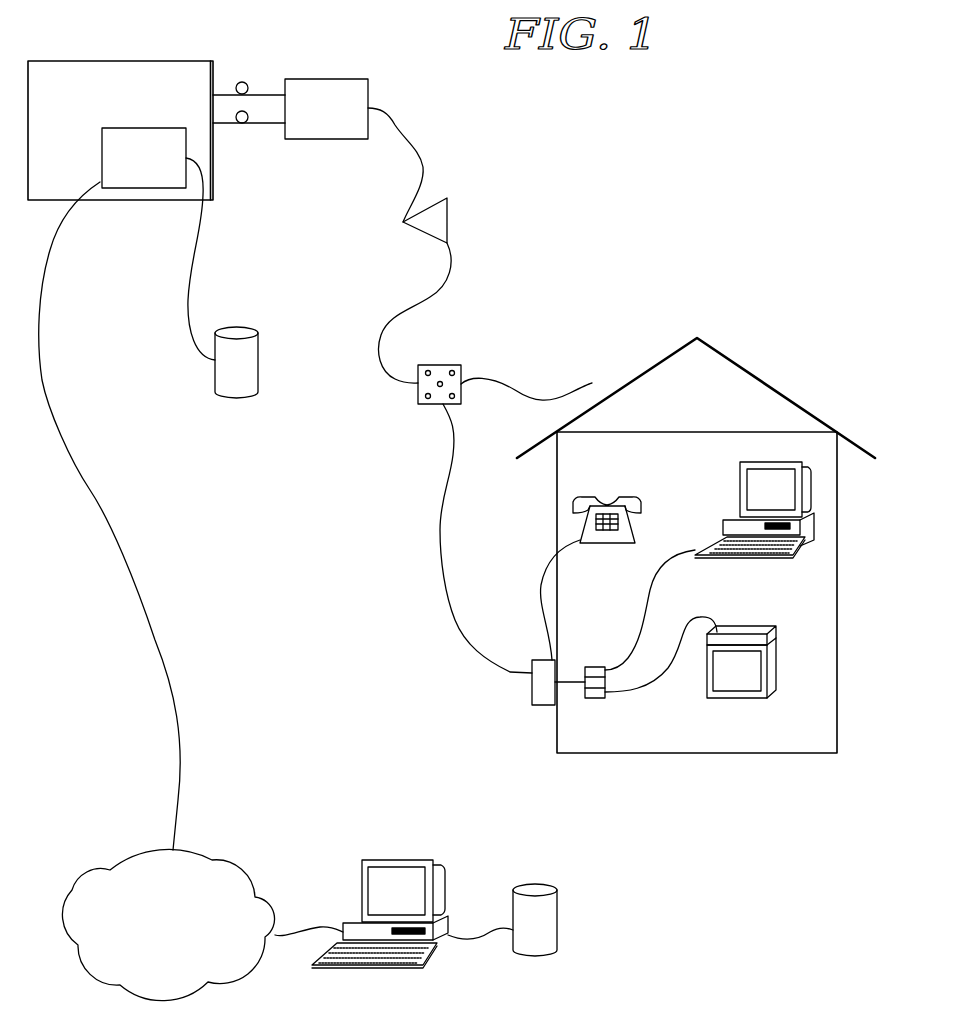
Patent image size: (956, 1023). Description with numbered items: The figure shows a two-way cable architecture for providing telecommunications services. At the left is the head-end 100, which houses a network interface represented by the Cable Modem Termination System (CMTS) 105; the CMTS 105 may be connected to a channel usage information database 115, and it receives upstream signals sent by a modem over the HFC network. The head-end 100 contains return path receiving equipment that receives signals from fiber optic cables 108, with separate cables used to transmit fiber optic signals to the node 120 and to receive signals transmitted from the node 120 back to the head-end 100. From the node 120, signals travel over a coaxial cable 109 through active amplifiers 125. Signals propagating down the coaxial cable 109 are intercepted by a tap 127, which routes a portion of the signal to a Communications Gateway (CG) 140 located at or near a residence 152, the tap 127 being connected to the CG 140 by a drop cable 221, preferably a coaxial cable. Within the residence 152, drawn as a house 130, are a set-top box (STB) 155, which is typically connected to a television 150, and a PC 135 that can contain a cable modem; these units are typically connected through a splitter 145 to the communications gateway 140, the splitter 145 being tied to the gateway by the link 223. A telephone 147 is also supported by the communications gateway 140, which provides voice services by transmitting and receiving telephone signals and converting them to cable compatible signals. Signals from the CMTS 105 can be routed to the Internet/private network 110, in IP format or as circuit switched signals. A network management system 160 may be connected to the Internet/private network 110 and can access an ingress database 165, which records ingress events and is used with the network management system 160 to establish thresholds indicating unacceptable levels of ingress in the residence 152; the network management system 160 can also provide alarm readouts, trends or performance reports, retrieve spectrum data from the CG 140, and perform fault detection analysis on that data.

The head-end 100 is at (120, 113).
The Cable Modem Termination System 105 is at (137, 139).
The fiber optic cables 108 is at (249, 83).
The coaxial cable 109 is at (415, 165).
The Internet/private network 110 is at (157, 591).
The channel usage information database 115 is at (249, 278).
The node 120 is at (338, 91).
The active amplifier 125 is at (411, 231).
The tap 127 is at (485, 323).
The subscriber premises (house) 130 is at (696, 398).
The PC 135 is at (709, 562).
The communications gateway 140 is at (497, 570).
The splitter 145 is at (651, 677).
The telephone 147 is at (591, 560).
The television 150 is at (760, 687).
The residence 152 is at (724, 592).
The set-top box 155 is at (757, 618).
The network management system 160 is at (361, 895).
The ingress database 165 is at (502, 905).
The drop cable 221 is at (467, 538).
The cable modem to splitter link 223 is at (582, 654).